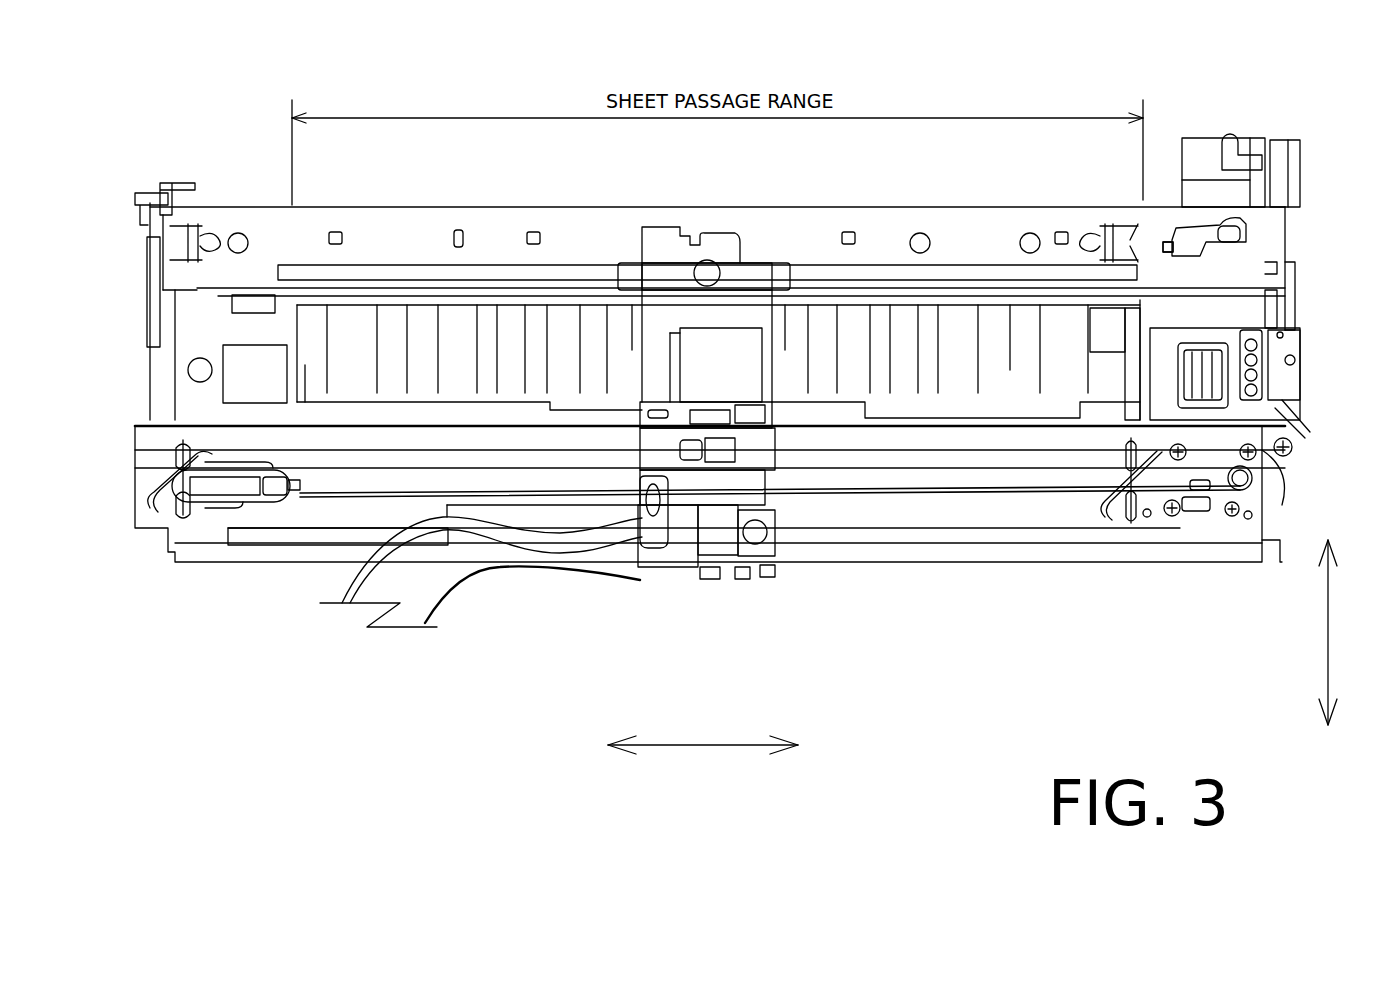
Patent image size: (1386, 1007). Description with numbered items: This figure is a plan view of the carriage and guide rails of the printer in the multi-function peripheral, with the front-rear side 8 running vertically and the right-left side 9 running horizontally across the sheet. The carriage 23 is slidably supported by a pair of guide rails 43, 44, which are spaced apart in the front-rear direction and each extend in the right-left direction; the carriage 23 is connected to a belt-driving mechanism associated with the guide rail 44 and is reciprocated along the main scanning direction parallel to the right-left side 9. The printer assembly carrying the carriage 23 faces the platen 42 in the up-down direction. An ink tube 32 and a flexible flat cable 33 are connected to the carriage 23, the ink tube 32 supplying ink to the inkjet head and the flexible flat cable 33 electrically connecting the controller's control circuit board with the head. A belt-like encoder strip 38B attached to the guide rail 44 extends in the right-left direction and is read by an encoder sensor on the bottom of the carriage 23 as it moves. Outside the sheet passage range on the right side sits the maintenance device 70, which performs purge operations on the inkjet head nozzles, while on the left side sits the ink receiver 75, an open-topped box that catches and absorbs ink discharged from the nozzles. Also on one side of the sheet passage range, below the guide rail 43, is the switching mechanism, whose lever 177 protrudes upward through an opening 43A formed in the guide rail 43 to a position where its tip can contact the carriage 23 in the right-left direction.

The front-rear side 8 is at (1328, 626).
The right-left side 9 is at (705, 745).
The carriage 23 is at (750, 345).
The ink tube 32 is at (597, 537).
The flexible flat cable 33 is at (520, 572).
The encoder strip 38B is at (332, 452).
The platen 42 is at (958, 325).
The guide rail 43 is at (585, 243).
The opening 43A is at (1248, 219).
The guide rail 44 is at (943, 515).
The maintenance device 70 is at (1304, 311).
The ink receiver 75 is at (261, 354).
The lever 177 is at (1165, 236).